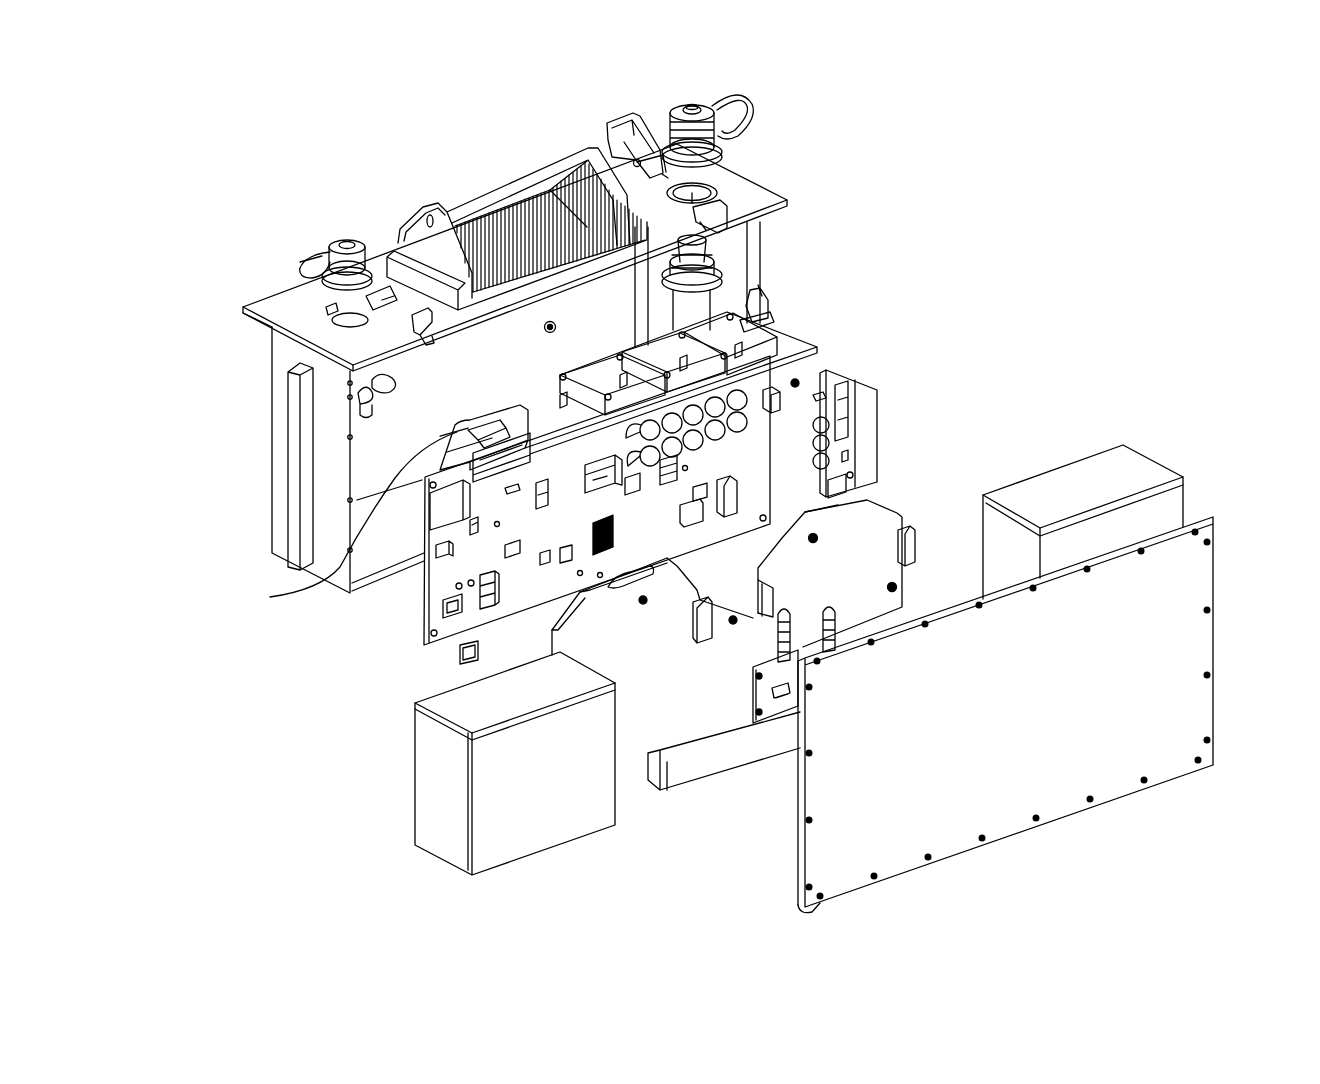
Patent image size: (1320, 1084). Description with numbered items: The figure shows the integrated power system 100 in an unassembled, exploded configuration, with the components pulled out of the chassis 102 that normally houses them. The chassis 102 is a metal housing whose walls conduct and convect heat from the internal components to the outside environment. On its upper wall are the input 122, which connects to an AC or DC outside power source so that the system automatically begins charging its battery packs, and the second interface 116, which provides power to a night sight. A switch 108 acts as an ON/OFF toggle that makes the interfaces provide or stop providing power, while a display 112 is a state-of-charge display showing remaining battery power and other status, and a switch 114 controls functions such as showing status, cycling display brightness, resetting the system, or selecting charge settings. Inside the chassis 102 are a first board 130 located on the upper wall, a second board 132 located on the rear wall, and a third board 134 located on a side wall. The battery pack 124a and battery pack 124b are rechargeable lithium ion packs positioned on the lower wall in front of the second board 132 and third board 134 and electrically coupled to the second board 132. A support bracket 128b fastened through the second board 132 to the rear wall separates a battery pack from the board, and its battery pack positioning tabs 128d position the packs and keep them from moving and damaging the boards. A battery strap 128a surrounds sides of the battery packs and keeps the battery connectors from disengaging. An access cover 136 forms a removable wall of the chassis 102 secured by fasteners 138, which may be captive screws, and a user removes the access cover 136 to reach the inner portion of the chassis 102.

The integrated power system 100 is at (226, 183).
The chassis 102 is at (282, 456).
The switch 108 is at (628, 120).
The display 112 is at (383, 508).
The switch 114 is at (310, 365).
The second interface 116 is at (343, 225).
The input 122 is at (698, 104).
The battery pack 124a is at (432, 790).
The battery pack 124b is at (1167, 507).
The battery strap 128a is at (695, 763).
The support bracket 128b is at (845, 557).
The battery pack positioning tabs 128d is at (903, 519).
The first board 130 is at (795, 348).
The second board 132 is at (437, 590).
The third board 134 is at (850, 460).
The access cover 136 is at (1058, 800).
The fasteners 138 is at (796, 906).